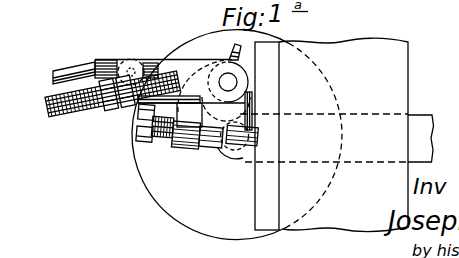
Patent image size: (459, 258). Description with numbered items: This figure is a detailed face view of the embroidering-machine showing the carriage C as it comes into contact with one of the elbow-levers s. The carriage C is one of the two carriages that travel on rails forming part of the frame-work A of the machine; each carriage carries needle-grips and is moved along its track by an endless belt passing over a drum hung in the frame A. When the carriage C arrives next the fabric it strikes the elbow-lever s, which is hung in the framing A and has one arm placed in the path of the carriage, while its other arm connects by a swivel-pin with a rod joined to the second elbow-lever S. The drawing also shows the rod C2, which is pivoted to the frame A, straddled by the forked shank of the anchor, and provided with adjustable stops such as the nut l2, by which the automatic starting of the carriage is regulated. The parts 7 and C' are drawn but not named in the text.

The rod 7 is at (85, 64).
The rod C2 is at (112, 108).
The adjustable stop l2 is at (117, 104).
The elbow-lever s is at (152, 72).
The elbow-lever S is at (198, 125).
The carriage C is at (237, 135).
The frame-work A is at (324, 134).
The projection C' is at (430, 138).